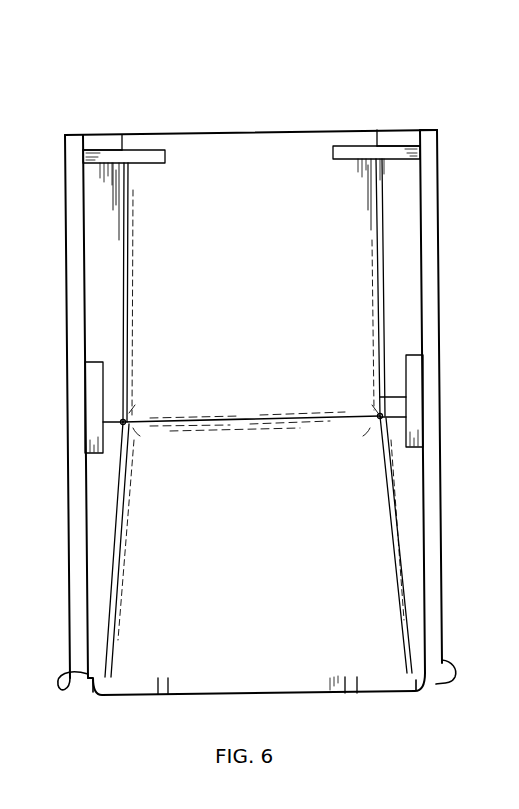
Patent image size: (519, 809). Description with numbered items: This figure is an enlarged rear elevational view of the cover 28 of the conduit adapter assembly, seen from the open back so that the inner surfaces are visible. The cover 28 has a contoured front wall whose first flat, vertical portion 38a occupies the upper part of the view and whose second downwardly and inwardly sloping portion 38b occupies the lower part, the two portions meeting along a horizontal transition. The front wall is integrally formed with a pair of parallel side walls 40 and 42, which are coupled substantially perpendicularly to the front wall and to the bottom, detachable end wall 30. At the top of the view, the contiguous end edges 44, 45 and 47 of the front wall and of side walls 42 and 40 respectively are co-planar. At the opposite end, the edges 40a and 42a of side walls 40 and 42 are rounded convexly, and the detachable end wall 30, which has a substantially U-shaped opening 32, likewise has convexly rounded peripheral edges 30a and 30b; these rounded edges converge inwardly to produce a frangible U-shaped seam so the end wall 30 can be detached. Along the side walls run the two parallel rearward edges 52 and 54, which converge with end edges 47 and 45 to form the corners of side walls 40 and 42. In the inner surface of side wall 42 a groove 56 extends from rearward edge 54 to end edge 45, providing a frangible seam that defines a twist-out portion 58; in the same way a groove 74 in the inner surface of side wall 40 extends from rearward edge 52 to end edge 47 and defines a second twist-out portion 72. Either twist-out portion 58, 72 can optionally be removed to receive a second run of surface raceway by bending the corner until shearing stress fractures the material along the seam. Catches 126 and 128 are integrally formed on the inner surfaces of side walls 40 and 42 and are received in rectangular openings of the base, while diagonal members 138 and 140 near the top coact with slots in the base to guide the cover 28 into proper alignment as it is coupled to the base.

The cover 28 is at (257, 129).
The detachable end wall 30 is at (158, 696).
The rounded peripheral edge 30a is at (426, 692).
The rounded peripheral edge 30b is at (95, 690).
The U-shaped opening 32 is at (343, 683).
The first flat vertical portion 38a is at (262, 316).
The second sloping portion 38b is at (255, 536).
The side wall 40 is at (443, 316).
The rounded edge 40a is at (452, 664).
The side wall 42 is at (66, 342).
The rounded edge 42a is at (62, 672).
The end edge 44 is at (362, 129).
The end edge 45 is at (77, 133).
The end edge 47 is at (426, 129).
The rearward edge 52 is at (432, 530).
The rearward edge 54 is at (80, 497).
The groove 56 is at (73, 289).
The twist-out portion 58 is at (88, 220).
The second twist-out portion 72 is at (420, 225).
The groove 74 is at (422, 282).
The catch 126 is at (380, 398).
The catch 128 is at (103, 397).
The diagonal member 138 is at (375, 168).
The diagonal member 140 is at (155, 165).